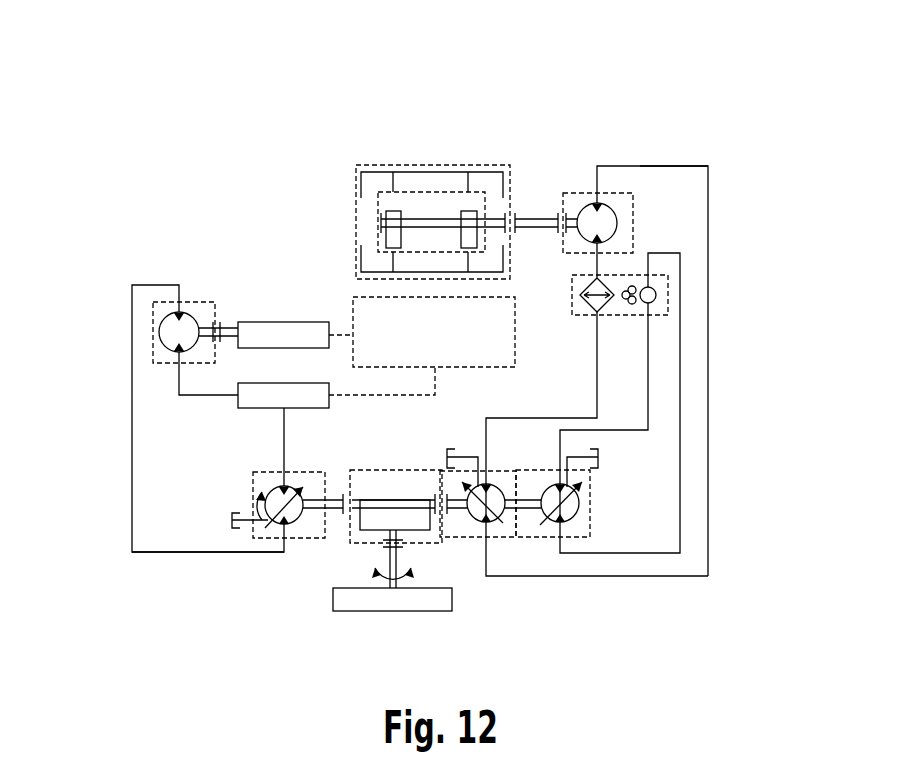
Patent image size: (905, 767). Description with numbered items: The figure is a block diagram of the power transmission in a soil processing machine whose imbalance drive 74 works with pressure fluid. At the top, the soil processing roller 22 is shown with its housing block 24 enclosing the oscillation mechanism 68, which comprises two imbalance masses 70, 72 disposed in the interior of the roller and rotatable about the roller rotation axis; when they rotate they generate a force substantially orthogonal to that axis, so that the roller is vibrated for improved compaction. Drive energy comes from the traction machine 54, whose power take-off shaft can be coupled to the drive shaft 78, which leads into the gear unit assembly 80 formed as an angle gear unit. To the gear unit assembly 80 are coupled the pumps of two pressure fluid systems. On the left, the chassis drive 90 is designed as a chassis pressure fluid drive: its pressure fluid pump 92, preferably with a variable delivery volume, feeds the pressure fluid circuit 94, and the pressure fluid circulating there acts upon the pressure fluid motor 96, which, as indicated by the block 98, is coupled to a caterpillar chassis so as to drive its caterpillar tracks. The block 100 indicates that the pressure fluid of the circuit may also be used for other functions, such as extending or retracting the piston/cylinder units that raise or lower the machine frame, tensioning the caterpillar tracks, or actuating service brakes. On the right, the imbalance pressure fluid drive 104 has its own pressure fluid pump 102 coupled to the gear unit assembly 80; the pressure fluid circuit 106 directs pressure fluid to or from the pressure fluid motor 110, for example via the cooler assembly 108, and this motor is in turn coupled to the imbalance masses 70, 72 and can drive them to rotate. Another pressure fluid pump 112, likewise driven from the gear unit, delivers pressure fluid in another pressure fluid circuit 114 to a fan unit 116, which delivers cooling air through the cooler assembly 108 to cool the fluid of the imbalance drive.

The soil processing roller 22 is at (368, 165).
The electric machine housing 24 is at (413, 172).
The traction machine 54 is at (375, 611).
The oscillation mechanism 68 is at (456, 182).
The imbalance mass 70 is at (383, 228).
The imbalance mass 72 is at (482, 219).
The imbalance drive 74 is at (655, 118).
The drive shaft 78 is at (398, 553).
The gear unit assembly 80 is at (385, 470).
The chassis drive 90 is at (175, 578).
The pressure fluid pump 92 is at (290, 487).
The pressure fluid circuit 94 is at (130, 445).
The pressure fluid motor 96 is at (185, 313).
The block 98 is at (272, 322).
The block 100 is at (253, 408).
The pressure fluid pump 102 is at (480, 487).
The imbalance pressure fluid drive 104 is at (722, 300).
The pressure fluid circuit 106 is at (693, 166).
The cooler assembly 108 is at (586, 313).
The pressure fluid motor 110 is at (615, 213).
The pressure fluid pump 112 is at (578, 500).
The pressure fluid circuit 114 is at (667, 553).
The fan unit 116 is at (655, 300).